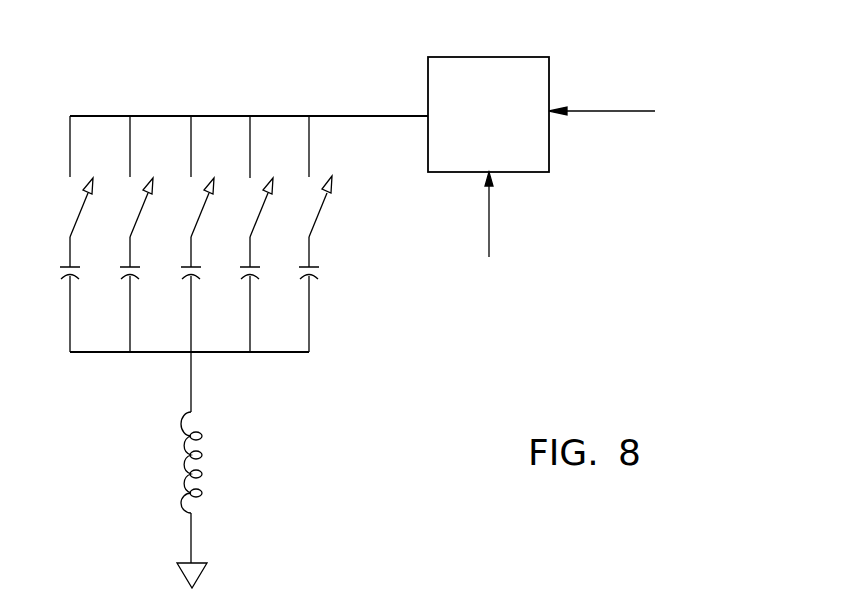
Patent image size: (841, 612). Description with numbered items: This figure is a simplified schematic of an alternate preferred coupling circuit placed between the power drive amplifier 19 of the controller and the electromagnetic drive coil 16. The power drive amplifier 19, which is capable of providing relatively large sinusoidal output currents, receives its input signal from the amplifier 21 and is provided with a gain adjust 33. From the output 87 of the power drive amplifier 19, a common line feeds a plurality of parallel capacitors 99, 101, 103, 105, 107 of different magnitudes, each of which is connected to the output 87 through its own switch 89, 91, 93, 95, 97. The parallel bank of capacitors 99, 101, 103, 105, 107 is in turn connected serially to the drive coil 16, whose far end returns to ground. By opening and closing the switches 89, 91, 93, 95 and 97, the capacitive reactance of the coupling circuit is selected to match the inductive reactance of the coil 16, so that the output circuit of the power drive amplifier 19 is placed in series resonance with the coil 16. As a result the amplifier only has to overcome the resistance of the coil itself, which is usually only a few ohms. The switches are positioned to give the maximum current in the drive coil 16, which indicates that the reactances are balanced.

The output 87 is at (343, 116).
The power drive amplifier 19 is at (497, 57).
The gain adjust 33 is at (489, 222).
The amplifier input 21 is at (626, 113).
The switch 89 is at (77, 215).
The switch 91 is at (137, 215).
The switch 93 is at (198, 207).
The switch 95 is at (262, 202).
The switch 97 is at (316, 202).
The capacitor 99 is at (63, 277).
The capacitor 101 is at (124, 277).
The capacitor 103 is at (187, 277).
The capacitor 105 is at (243, 274).
The capacitor 107 is at (322, 273).
The drive coil 16 is at (178, 468).